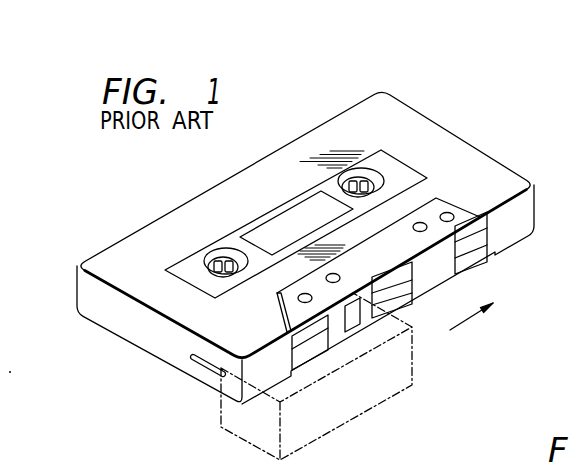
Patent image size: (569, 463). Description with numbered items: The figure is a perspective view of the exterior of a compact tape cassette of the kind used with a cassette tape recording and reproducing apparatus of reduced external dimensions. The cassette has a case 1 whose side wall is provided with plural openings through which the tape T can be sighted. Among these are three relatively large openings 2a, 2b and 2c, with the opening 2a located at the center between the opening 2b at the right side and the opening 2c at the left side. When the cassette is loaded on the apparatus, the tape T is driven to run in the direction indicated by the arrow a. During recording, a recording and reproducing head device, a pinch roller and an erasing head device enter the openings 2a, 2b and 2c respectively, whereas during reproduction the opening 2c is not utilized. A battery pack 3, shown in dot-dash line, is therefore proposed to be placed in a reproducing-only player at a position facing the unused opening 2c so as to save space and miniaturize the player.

The case 1 is at (137, 337).
The opening 2a is at (388, 283).
The opening 2b is at (474, 228).
The opening 2c is at (285, 336).
The tape T is at (397, 293).
The arrow a is at (471, 320).
The battery pack 3 is at (357, 413).